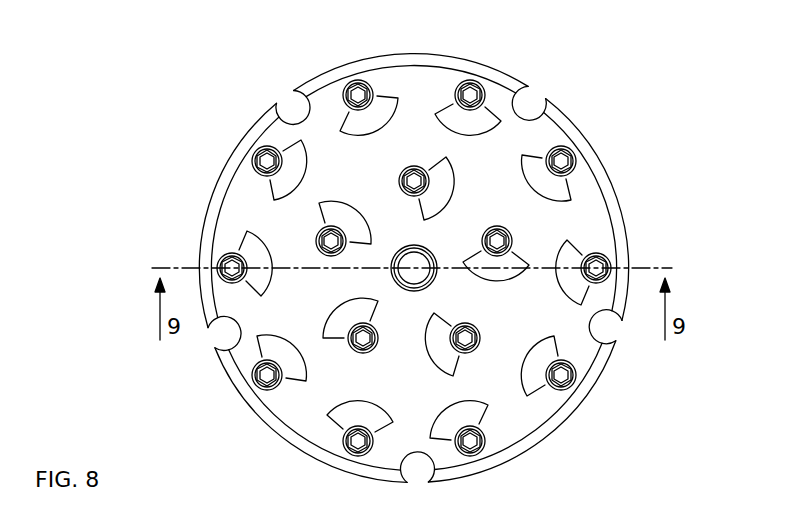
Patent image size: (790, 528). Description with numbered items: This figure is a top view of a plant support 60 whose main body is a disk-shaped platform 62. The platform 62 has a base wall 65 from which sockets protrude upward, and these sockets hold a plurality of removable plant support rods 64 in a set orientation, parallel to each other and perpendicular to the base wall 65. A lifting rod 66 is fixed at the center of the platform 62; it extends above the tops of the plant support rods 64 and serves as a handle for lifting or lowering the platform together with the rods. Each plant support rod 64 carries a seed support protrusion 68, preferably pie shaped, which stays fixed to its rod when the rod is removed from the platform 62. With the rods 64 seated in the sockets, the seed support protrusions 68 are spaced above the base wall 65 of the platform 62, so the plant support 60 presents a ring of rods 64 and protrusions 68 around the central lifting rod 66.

The plant support 60 is at (617, 91).
The platform 62 is at (417, 82).
The plant support rods 64 is at (562, 162).
The base wall 65 is at (237, 203).
The lifting rod 66 is at (413, 265).
The seed support protrusions 68 is at (480, 122).